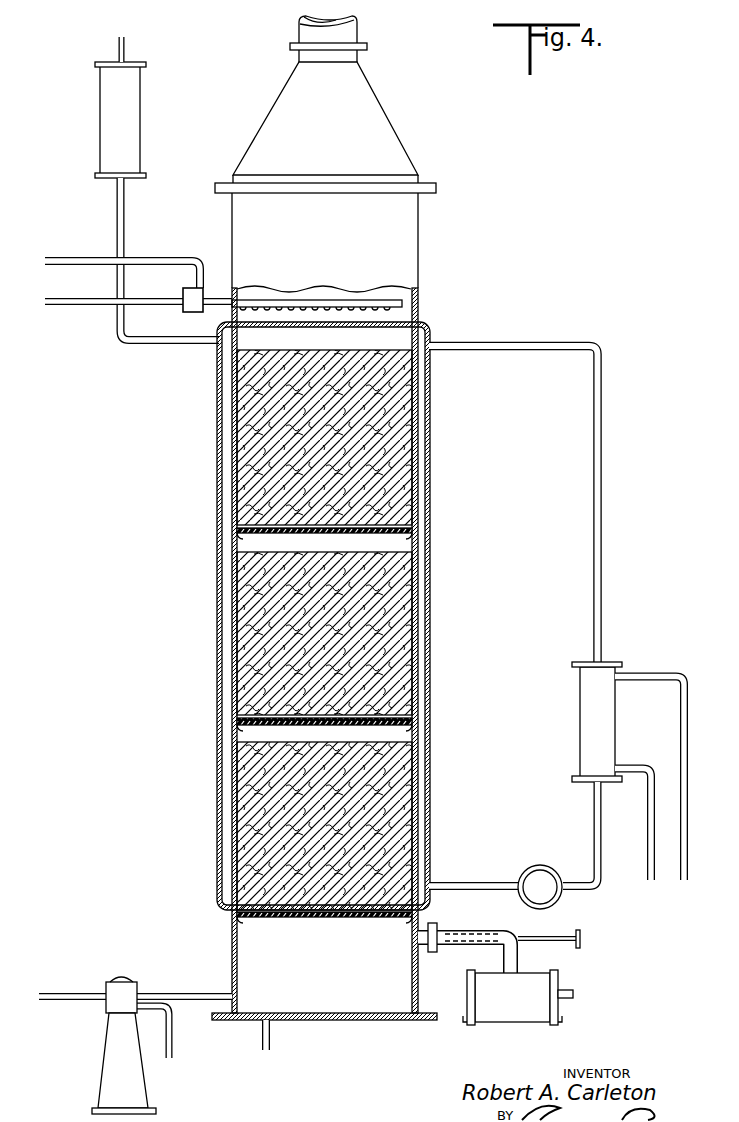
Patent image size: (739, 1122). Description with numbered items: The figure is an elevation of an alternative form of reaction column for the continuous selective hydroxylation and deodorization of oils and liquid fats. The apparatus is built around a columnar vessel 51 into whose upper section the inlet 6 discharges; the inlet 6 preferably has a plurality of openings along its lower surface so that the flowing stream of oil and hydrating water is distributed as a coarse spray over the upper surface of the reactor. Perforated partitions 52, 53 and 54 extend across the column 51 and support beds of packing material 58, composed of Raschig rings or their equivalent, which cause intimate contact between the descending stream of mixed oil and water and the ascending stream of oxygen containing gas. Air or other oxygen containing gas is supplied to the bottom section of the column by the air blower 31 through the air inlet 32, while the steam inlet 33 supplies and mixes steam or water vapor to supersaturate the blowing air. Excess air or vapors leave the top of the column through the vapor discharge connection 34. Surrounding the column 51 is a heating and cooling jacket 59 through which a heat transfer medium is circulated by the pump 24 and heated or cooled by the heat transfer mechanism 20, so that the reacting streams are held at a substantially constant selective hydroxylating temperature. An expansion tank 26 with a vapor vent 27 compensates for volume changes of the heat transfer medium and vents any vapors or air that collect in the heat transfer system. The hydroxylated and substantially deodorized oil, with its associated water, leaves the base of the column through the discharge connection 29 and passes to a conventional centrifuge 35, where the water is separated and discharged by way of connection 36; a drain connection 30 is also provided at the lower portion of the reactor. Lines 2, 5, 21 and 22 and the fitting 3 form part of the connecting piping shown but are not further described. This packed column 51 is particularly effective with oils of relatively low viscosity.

The liquid feed pipe 2 is at (90, 298).
The valve 3 is at (184, 310).
The gas feed pipe 5 is at (82, 258).
The inlet 6 is at (402, 303).
The heat transfer mechanism 20 is at (580, 717).
The outlet pipes 21 is at (658, 878).
The vapor pipe 22 is at (602, 474).
The pump 24 is at (542, 865).
The expansion tank 26 is at (100, 110).
The vapor vent 27 is at (118, 44).
The discharge connection 29 is at (184, 994).
The drain connection 30 is at (270, 1043).
The air blower 31 is at (558, 985).
The air inlet 32 is at (428, 950).
The steam inlet 33 is at (552, 936).
The vapor discharge connection 34 is at (352, 38).
The centrifuge 35 is at (112, 1010).
The water discharge connection 36 is at (173, 1041).
The columnar vessel 51 is at (418, 221).
The perforated partition 52 is at (378, 917).
The perforated partition 53 is at (400, 725).
The perforated partition 54 is at (240, 535).
The packing material 58 is at (232, 443).
The heating and cooling jacket 59 is at (430, 578).